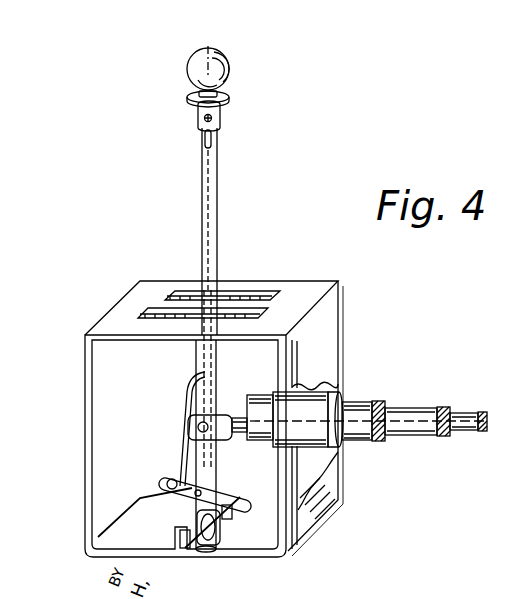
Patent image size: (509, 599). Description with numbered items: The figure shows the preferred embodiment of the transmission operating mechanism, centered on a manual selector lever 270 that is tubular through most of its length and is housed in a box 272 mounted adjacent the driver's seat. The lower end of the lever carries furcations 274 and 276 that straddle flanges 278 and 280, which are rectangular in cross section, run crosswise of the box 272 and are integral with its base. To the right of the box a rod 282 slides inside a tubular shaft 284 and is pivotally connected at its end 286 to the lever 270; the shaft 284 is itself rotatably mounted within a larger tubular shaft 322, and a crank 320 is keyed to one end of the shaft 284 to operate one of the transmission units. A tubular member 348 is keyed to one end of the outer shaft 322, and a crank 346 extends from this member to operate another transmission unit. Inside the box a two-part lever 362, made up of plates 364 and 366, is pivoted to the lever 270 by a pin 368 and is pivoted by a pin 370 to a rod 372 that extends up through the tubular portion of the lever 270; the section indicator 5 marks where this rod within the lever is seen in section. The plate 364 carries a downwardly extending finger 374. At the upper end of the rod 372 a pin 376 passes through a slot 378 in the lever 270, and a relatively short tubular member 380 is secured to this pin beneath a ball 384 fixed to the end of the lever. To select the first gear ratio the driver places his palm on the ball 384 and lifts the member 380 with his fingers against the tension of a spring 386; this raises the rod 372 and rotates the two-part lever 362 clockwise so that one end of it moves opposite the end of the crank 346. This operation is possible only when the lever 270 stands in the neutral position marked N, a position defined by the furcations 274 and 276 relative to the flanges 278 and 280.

The section line 5- 5 is at (208, 46).
The selector lever 270 is at (218, 205).
The box 272 is at (334, 327).
The furcation 274 is at (208, 553).
The furcation 276 is at (221, 534).
The flange 278 is at (185, 548).
The flange 280 is at (232, 515).
The rod 282 is at (472, 431).
The tubular shaft 284 is at (416, 412).
The end of rod 286 is at (233, 403).
The crank 320 is at (258, 463).
The tubular shaft 322 is at (362, 407).
The crank 346 is at (281, 484).
The tubular member 348 is at (309, 397).
The two-part lever 362 is at (139, 499).
The plate 364 is at (175, 480).
The plate 366 is at (184, 462).
The pin 368 is at (194, 496).
The pin 370 is at (166, 484).
The rod 372 is at (188, 395).
The finger 374 is at (180, 539).
The pin 376 is at (222, 118).
The slot 378 is at (212, 140).
The tubular member 380 is at (221, 111).
The ball 384 is at (197, 75).
The spring 386 is at (197, 98).